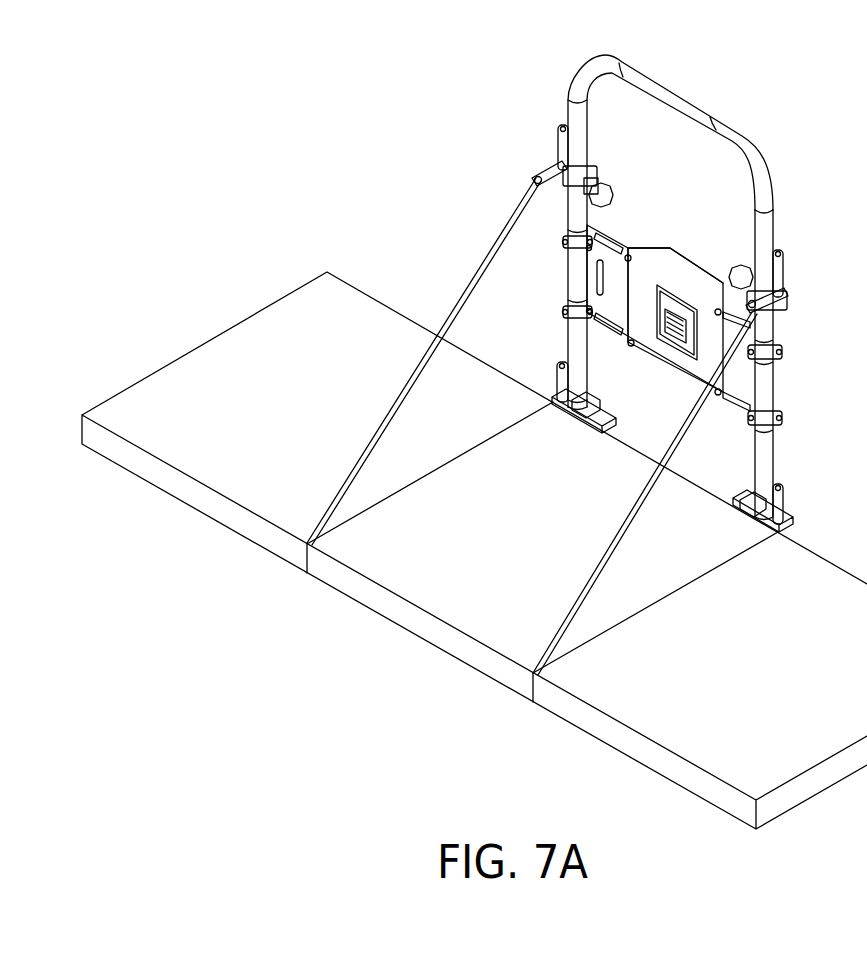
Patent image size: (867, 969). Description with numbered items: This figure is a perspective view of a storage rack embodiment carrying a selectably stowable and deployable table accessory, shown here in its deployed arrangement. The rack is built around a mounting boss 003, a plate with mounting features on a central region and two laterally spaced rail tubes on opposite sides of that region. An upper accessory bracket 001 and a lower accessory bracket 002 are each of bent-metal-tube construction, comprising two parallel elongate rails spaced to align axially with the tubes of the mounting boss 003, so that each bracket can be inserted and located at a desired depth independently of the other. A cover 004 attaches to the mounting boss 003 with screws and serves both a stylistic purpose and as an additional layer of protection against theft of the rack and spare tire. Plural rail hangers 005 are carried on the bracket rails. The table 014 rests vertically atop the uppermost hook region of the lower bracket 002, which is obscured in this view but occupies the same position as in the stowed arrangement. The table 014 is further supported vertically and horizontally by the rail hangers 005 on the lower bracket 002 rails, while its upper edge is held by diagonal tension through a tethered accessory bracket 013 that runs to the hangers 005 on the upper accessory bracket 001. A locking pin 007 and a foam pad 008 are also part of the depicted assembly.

The upper accessory bracket 001 is at (598, 66).
The lower accessory bracket 002 is at (763, 465).
The mounting boss 003 is at (620, 238).
The cover 004 is at (705, 278).
The rail hanger 005 is at (598, 177).
The locking pin 007 is at (778, 358).
The foam pad 008 is at (713, 312).
The tethered accessory bracket 013 is at (542, 175).
The table 014 is at (598, 458).